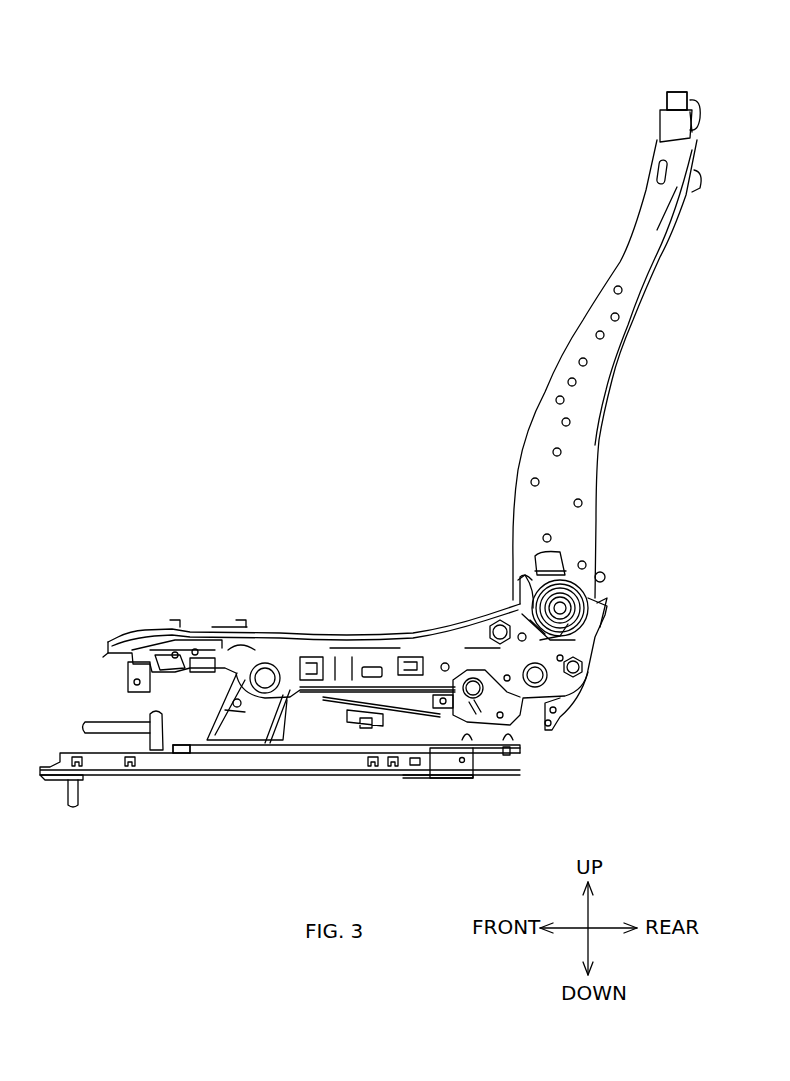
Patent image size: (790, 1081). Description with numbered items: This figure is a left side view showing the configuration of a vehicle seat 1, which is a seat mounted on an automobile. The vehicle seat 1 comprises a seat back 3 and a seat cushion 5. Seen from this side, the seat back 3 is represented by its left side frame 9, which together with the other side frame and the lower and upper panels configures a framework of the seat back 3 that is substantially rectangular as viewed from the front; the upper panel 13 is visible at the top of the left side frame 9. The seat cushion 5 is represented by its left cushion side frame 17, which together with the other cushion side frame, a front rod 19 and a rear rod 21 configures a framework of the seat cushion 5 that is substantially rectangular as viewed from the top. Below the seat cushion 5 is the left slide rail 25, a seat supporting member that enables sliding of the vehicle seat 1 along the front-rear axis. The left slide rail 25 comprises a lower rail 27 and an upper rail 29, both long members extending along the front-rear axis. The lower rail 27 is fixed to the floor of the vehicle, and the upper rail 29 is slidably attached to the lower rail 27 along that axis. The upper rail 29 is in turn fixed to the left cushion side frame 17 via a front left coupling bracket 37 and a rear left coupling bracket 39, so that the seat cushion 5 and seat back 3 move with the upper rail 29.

The vehicle seat 1 is at (328, 271).
The seat back 3 is at (612, 242).
The seat cushion 5 is at (360, 633).
The left side frame 9 is at (590, 394).
The upper panel 13 is at (677, 90).
The left cushion side frame 17 is at (457, 643).
The front rod 19 is at (263, 665).
The rear rod 21 is at (538, 674).
The left slide rail 25 is at (290, 778).
The lower rail 27 is at (153, 762).
The upper rail 29 is at (340, 748).
The front left coupling bracket 37 is at (243, 718).
The rear left coupling bracket 39 is at (487, 770).